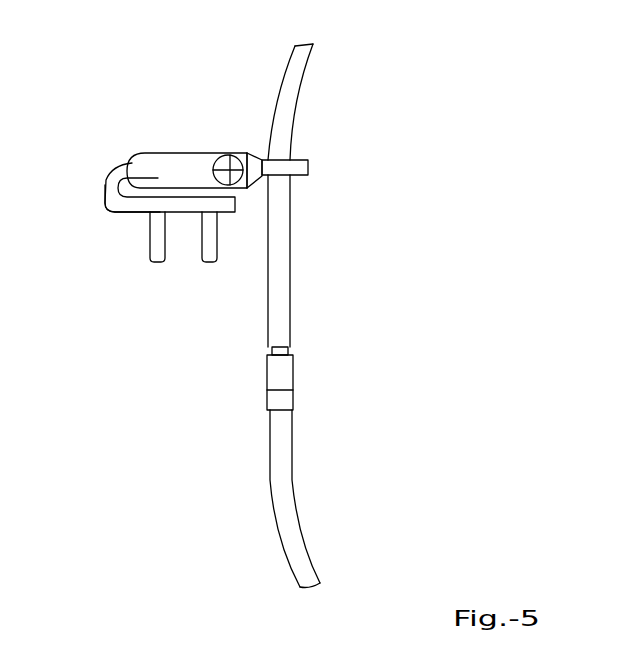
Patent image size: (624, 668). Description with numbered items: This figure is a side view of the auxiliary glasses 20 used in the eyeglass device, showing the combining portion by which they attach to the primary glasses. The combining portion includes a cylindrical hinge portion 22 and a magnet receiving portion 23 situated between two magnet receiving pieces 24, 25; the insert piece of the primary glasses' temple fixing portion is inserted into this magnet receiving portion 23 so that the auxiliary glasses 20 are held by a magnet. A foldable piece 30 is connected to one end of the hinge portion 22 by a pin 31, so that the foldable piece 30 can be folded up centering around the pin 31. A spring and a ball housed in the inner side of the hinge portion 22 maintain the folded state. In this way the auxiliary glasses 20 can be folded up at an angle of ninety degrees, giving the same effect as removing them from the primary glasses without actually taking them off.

The auxiliary glasses 20 is at (138, 110).
The hinge portion 22 is at (148, 173).
The magnet receiving portion 23 is at (123, 210).
The magnet receiving piece 24 is at (208, 264).
The magnet receiving piece 25 is at (157, 264).
The foldable piece 30 is at (310, 163).
The pin 31 is at (230, 155).